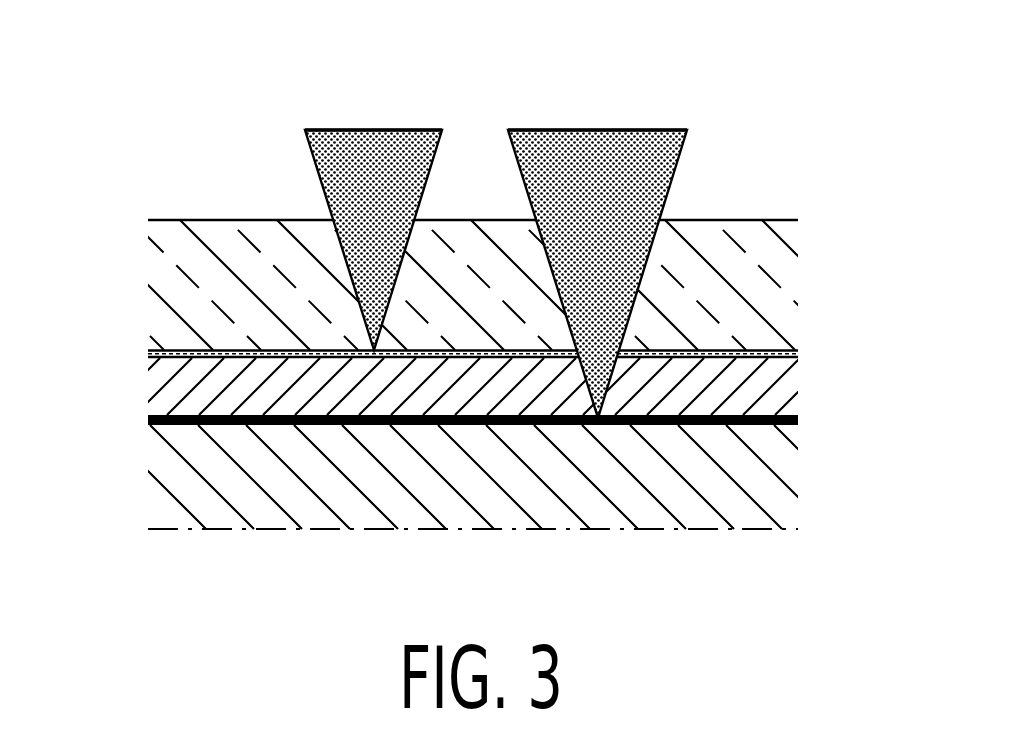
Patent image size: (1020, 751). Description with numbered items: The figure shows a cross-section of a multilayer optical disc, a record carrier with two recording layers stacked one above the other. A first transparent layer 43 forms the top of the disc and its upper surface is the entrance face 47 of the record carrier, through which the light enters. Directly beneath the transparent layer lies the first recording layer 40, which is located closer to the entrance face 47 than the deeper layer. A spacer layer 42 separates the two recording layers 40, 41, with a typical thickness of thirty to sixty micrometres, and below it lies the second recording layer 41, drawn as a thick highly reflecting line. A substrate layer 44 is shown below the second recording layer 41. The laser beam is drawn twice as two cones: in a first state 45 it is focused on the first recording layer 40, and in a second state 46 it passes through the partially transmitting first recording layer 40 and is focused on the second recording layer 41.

The first recording layer 40 is at (798, 354).
The second recording layer 41 is at (798, 420).
The spacer layer 42 is at (147, 386).
The first transparent layer 43 is at (147, 272).
The substrate layer 44 is at (147, 495).
The first state of the laser beam 45 is at (362, 130).
The second state of the laser beam 46 is at (600, 130).
The entrance face 47 is at (742, 218).